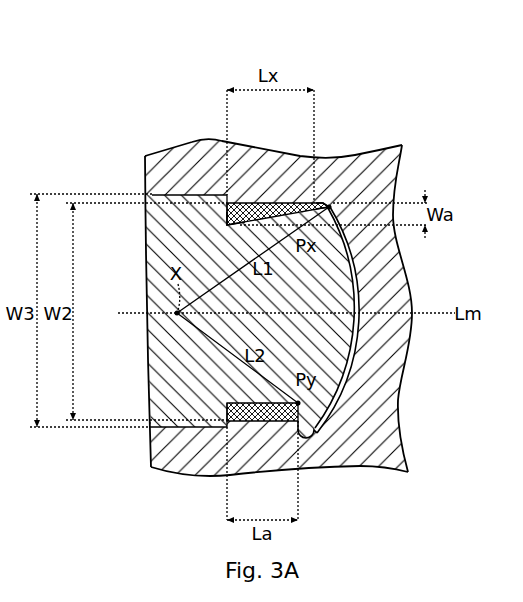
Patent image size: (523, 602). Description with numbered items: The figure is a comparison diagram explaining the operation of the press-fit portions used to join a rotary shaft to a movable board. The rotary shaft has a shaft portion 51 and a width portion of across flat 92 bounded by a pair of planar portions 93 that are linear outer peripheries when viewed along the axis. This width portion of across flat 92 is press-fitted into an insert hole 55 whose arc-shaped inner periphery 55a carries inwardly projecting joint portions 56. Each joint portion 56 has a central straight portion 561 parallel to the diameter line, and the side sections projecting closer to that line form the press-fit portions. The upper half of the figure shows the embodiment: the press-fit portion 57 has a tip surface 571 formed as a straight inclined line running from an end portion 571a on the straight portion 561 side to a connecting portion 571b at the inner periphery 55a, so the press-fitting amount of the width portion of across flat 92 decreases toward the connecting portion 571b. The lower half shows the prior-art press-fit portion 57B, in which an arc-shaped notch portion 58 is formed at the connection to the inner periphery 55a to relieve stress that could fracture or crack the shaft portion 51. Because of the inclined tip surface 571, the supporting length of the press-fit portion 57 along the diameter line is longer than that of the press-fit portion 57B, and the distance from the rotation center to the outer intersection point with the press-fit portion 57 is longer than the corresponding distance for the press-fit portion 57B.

The shaft portion 51 is at (392, 250).
The insert hole 55 is at (361, 292).
The inner periphery 55a is at (352, 266).
The joint portion 56 is at (152, 180).
The straight portion 561 is at (200, 175).
The press-fit portion 57 is at (270, 202).
The press-fit portion 57B is at (278, 422).
The tip surface 571 is at (255, 202).
The end portion 571a is at (227, 228).
The connecting portion 571b is at (330, 205).
The arc-shaped notch portion 58 is at (308, 440).
The width portion of across flat 92 is at (360, 367).
The planar portion 93 is at (168, 190).